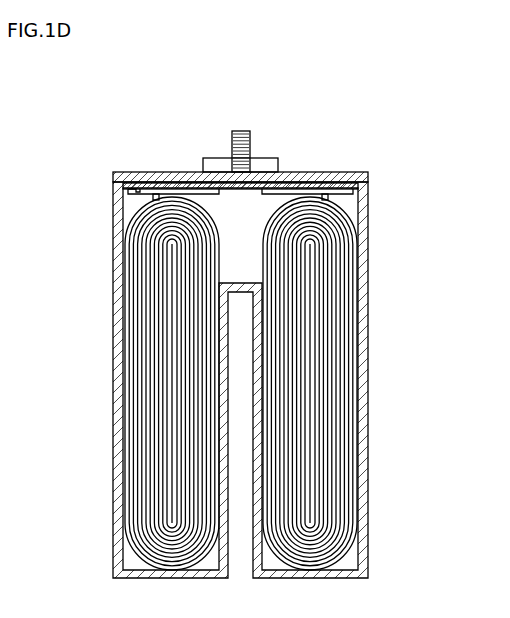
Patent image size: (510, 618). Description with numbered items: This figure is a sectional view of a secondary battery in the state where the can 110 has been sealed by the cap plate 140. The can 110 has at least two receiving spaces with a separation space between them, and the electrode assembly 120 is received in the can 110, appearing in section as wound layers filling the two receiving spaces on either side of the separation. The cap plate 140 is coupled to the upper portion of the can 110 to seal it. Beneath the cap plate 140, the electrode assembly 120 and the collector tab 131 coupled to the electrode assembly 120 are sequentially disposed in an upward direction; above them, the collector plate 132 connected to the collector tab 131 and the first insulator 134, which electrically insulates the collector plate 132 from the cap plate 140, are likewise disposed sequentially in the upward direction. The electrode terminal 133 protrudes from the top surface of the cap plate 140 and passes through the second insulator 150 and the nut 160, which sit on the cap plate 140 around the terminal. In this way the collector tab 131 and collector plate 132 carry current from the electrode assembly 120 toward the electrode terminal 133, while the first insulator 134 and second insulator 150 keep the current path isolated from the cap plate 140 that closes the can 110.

The can 110 is at (104, 258).
The electrode assembly 120 is at (367, 258).
The collector tab 131 is at (330, 197).
The collector plate 132 is at (340, 185).
The electrode terminal 133 is at (236, 130).
The first insulator 134 is at (125, 189).
The cap plate 140 is at (132, 172).
The second insulator 150 is at (286, 176).
The nut 160 is at (265, 157).